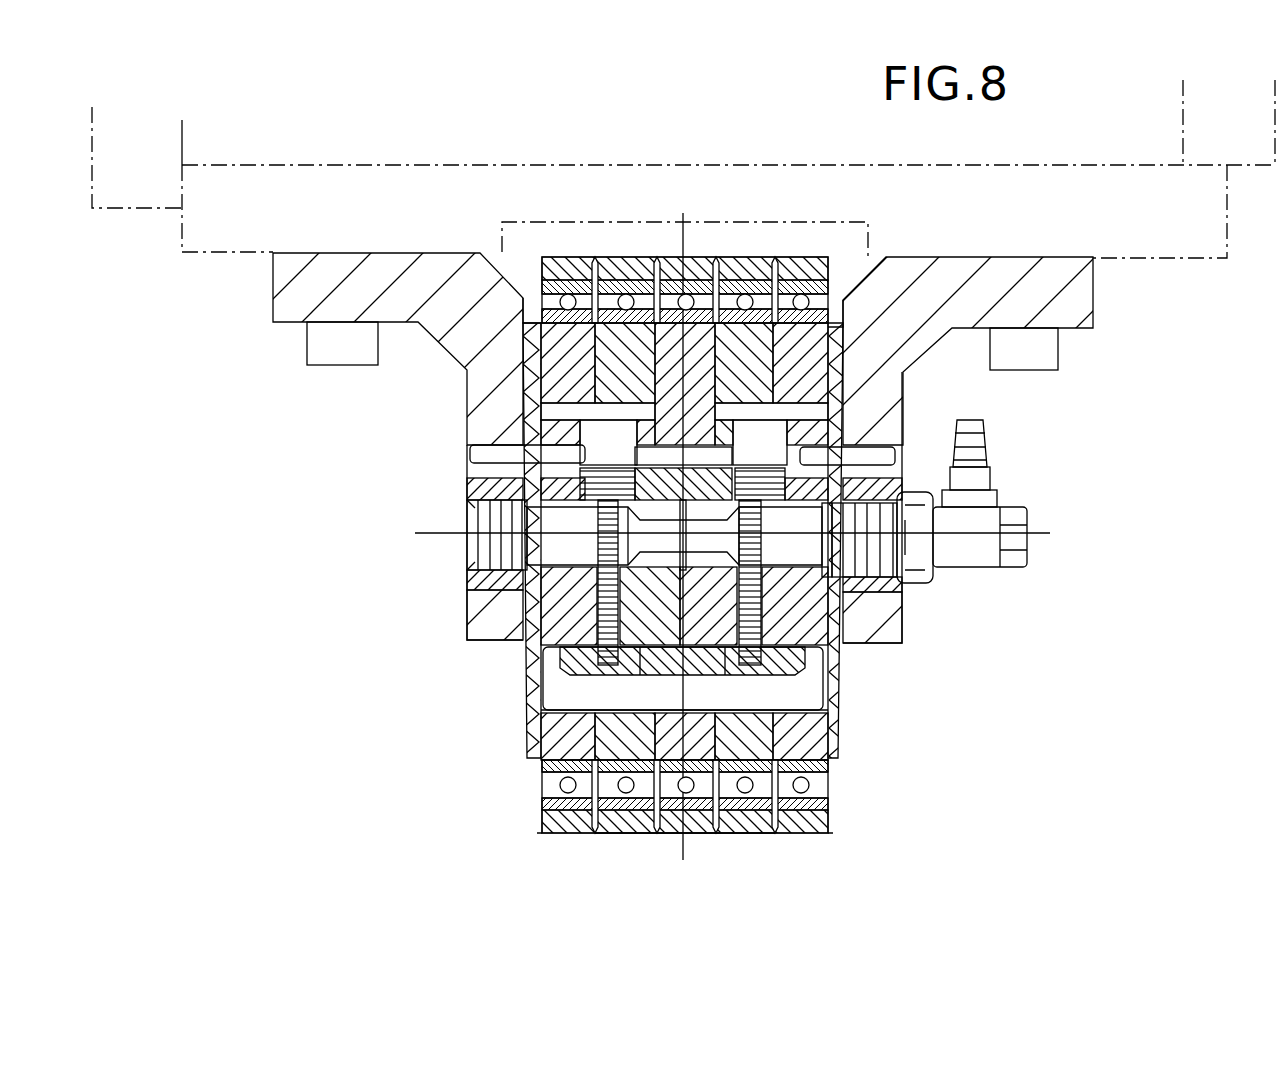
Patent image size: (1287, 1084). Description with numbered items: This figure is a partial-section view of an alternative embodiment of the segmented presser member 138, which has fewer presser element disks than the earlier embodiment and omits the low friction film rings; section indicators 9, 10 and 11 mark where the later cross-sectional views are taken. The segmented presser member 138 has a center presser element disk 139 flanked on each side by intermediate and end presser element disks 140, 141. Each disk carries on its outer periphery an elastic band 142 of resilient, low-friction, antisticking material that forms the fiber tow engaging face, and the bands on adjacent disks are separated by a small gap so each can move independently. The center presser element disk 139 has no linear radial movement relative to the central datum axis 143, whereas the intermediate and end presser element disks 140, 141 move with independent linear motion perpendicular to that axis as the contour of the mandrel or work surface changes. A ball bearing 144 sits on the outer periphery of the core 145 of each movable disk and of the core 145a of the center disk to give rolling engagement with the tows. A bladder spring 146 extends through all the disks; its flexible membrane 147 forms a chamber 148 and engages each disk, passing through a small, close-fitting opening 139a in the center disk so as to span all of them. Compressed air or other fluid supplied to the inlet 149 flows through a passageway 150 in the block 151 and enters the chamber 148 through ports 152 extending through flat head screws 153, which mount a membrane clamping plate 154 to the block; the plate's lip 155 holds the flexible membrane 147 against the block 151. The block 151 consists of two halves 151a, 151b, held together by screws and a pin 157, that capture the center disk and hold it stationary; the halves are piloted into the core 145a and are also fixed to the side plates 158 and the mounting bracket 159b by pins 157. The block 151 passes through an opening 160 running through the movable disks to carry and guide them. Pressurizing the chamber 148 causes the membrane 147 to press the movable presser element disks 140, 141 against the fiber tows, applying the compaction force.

The section line 9- 9 is at (657, 907).
The section line 10- 10 is at (595, 907).
The section line 11- 11 is at (537, 907).
The segmented presser member 138 is at (942, 650).
The center presser element disk 139 is at (699, 842).
The opening 139a is at (740, 678).
The intermediate presser element disk 140 is at (620, 838).
The end presser element disk 141 is at (525, 829).
The elastic band 142 is at (806, 833).
The central datum axis 143 is at (440, 533).
The ball bearing 144 is at (825, 767).
The core 145 is at (537, 757).
The core of the center disk 145a is at (838, 738).
The bladder spring 146 is at (846, 688).
The flexible membrane 147 is at (532, 708).
The chamber 148 is at (625, 699).
The inlet 149 is at (985, 447).
The passageway 150 is at (797, 559).
The block 151 is at (525, 645).
The block half 151a is at (470, 572).
The block half 151b is at (885, 582).
The port 152 is at (628, 531).
The flat head screw 153 is at (614, 570).
The membrane clamping plate 154 is at (660, 678).
The lip 155 is at (532, 680).
The pin 157 is at (470, 455).
The side plate 158 is at (520, 357).
The mounting bracket 159b is at (288, 326).
The opening 160 is at (547, 410).